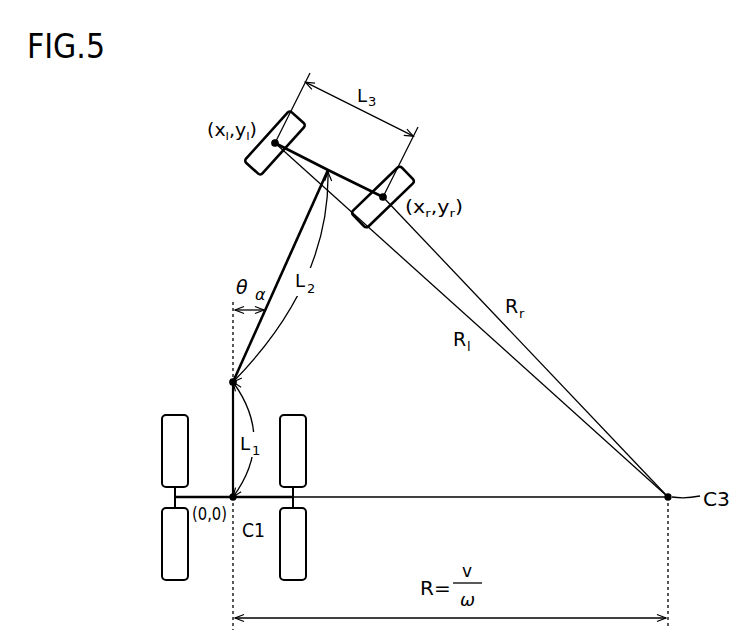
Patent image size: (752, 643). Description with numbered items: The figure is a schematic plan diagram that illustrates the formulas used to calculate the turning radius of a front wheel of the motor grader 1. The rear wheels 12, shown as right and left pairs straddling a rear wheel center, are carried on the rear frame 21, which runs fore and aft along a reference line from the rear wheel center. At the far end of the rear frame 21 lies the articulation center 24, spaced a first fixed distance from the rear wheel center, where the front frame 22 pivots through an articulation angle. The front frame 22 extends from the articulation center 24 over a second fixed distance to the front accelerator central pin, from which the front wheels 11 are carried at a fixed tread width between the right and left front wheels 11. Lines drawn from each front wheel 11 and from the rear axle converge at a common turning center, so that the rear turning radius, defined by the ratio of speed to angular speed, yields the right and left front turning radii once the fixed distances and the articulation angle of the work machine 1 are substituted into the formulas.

The motor grader 1 is at (180, 290).
The front wheels 11 is at (278, 120).
The rear wheels 12 is at (162, 430).
The rear frame 21 is at (233, 578).
The front frame 22 is at (288, 258).
The articulation center 24 is at (237, 383).